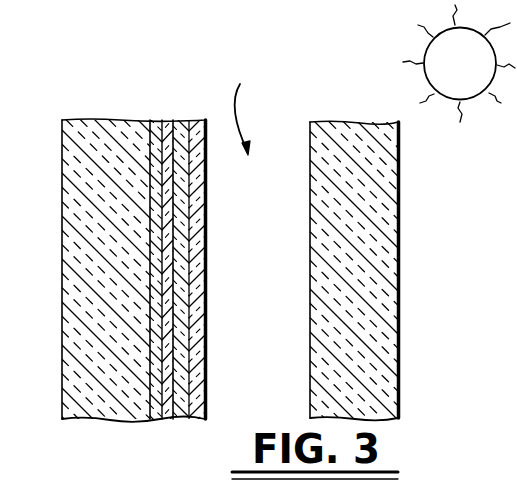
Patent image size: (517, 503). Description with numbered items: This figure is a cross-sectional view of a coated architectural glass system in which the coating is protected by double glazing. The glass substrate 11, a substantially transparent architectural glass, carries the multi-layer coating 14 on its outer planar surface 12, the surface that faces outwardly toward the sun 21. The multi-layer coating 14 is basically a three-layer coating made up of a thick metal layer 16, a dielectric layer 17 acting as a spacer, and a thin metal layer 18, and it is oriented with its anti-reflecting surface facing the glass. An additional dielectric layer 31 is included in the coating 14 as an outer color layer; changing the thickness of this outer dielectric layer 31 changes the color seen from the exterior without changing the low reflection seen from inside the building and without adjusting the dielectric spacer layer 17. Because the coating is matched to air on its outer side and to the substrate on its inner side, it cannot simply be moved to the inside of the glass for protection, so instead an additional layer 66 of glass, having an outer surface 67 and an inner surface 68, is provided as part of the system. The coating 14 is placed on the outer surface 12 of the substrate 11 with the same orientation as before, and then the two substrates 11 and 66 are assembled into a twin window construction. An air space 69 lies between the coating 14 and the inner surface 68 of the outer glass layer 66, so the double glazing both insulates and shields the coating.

The substrate 11 is at (89, 135).
The outer planar surface 12 is at (152, 133).
The multi-layer coating 14 is at (222, 113).
The thick metal layer 16 is at (178, 421).
The dielectric layer 17 is at (168, 421).
The thin metal layer 18 is at (153, 422).
The additional dielectric layer 31 is at (196, 421).
The additional layer of glass 66 is at (352, 134).
The outer surface 67 is at (400, 199).
The inner surface 68 is at (310, 145).
The air space 69 is at (253, 111).
The sun 21 is at (441, 75).